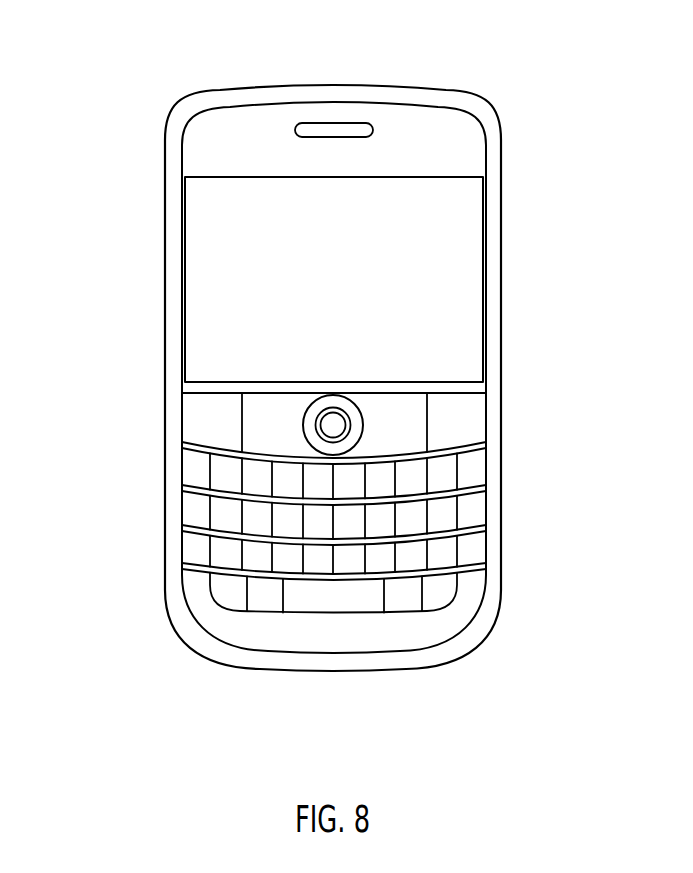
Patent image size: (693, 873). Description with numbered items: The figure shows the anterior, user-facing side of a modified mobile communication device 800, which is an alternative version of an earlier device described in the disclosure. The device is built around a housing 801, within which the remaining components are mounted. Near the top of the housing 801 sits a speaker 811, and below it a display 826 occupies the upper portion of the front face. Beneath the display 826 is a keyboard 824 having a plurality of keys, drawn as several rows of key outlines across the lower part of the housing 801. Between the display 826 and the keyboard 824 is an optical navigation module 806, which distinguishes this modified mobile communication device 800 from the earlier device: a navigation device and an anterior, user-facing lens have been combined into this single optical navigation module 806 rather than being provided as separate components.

The modified mobile communication device 800 is at (138, 75).
The housing 801 is at (164, 358).
The speaker 811 is at (326, 124).
The display 826 is at (350, 309).
The optical navigation module 806 is at (348, 412).
The keyboard 824 is at (515, 624).